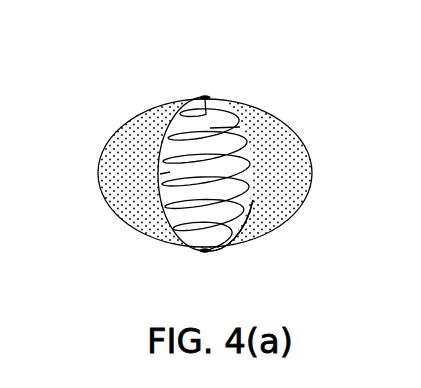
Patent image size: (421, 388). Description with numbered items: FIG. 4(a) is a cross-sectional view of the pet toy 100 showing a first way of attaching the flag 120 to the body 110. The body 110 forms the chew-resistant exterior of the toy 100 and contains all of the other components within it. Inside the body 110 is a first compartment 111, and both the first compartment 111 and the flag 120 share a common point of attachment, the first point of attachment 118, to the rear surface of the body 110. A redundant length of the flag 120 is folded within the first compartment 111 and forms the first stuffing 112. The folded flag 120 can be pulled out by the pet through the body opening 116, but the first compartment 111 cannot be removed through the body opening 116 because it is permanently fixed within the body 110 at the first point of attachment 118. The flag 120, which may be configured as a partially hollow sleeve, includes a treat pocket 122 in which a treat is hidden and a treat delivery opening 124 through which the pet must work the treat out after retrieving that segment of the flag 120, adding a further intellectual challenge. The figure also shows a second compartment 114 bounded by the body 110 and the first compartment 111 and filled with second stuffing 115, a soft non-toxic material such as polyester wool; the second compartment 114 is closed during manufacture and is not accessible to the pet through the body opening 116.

The pet toy 100 is at (249, 64).
The body 110 is at (299, 205).
The first compartment 111 is at (252, 222).
The first stuffing 112 is at (161, 143).
The second compartment 114 is at (276, 208).
The second stuffing 115 is at (125, 203).
The body opening 116 is at (203, 250).
The first point of attachment 118 is at (205, 97).
The flag 120 is at (160, 174).
The treat pocket 122 is at (252, 168).
The treat delivery opening 124 is at (240, 127).